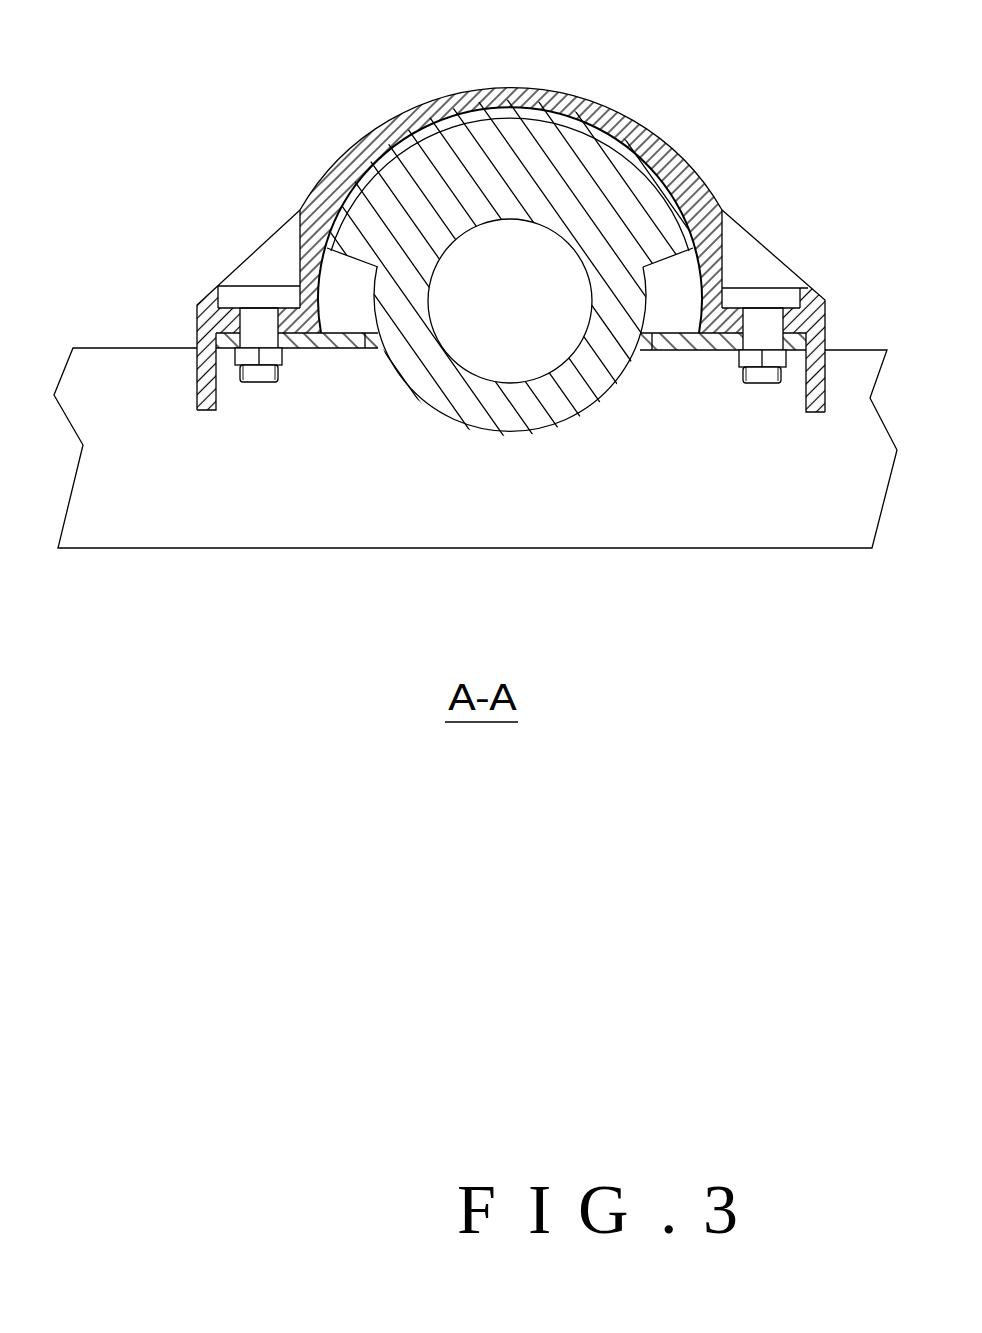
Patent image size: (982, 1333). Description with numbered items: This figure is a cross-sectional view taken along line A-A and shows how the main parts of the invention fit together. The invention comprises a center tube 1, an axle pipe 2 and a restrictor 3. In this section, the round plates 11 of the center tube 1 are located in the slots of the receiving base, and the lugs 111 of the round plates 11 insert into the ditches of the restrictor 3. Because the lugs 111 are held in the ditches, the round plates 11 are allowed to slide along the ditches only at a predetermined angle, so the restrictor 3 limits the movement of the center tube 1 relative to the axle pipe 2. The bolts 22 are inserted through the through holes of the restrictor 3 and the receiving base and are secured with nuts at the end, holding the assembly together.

The center tube 1 is at (462, 428).
The round plates 11 is at (567, 387).
The lugs 111 is at (608, 158).
The axle pipe 2 is at (123, 398).
The bolts 22 is at (787, 298).
The restrictor 3 is at (350, 155).